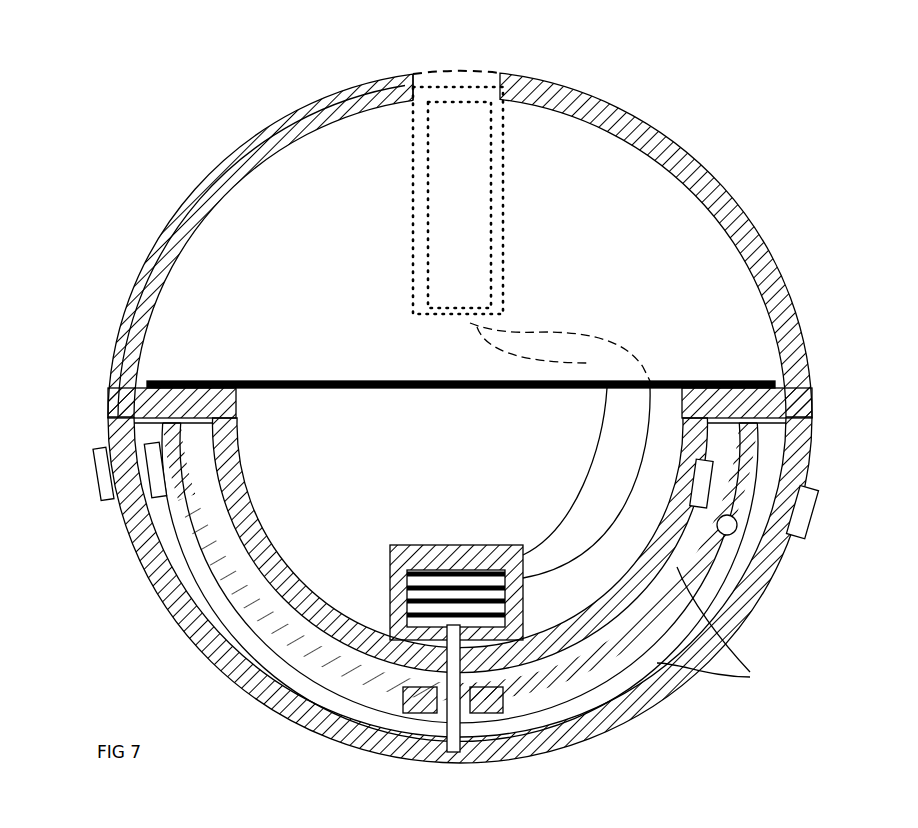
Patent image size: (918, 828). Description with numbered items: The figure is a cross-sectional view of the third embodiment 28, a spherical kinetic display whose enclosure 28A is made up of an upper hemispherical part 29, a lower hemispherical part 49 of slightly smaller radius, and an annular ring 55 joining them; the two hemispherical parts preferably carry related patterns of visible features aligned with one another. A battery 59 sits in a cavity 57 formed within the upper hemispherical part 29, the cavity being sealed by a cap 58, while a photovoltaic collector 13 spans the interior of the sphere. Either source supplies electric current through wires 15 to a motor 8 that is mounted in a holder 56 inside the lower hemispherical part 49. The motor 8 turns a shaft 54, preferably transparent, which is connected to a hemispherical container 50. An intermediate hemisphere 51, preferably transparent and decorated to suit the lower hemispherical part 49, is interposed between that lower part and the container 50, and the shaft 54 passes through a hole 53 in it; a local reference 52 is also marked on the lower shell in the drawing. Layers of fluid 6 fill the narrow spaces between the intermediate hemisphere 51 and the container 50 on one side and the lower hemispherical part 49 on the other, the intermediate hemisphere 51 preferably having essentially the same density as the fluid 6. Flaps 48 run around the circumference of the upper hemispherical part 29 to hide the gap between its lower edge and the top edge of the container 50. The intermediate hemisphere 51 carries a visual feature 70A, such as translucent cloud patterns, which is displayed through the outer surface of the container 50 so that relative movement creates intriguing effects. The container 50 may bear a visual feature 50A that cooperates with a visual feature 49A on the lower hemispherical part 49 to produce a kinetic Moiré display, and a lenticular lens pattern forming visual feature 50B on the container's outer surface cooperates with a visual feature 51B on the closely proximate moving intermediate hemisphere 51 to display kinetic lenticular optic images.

The third embodiment 28 is at (112, 238).
The enclosure 28A is at (222, 157).
The upper hemispherical part 29 is at (120, 322).
The cavity 57 is at (413, 133).
The cap 58 is at (437, 73).
The battery 59 is at (467, 165).
The photovoltaic collector 13 is at (333, 378).
The wires 15 is at (585, 366).
The annular ring 55 is at (240, 408).
The flaps 48 is at (106, 414).
The visual feature 49A is at (814, 425).
The lower hemispherical part 49 is at (222, 670).
The hemispherical container 50 is at (137, 556).
The visual feature 50A is at (803, 533).
The visual feature 50B is at (97, 477).
The intermediate hemisphere 51 is at (228, 600).
The visual feature 51B is at (148, 512).
The lower shell left segment 52 is at (330, 743).
The shaft 54 is at (533, 755).
The hole 53 is at (443, 712).
The holder 56 is at (390, 582).
The motor 8 is at (467, 578).
The fluid 6 is at (712, 629).
The visual feature 70A is at (740, 540).